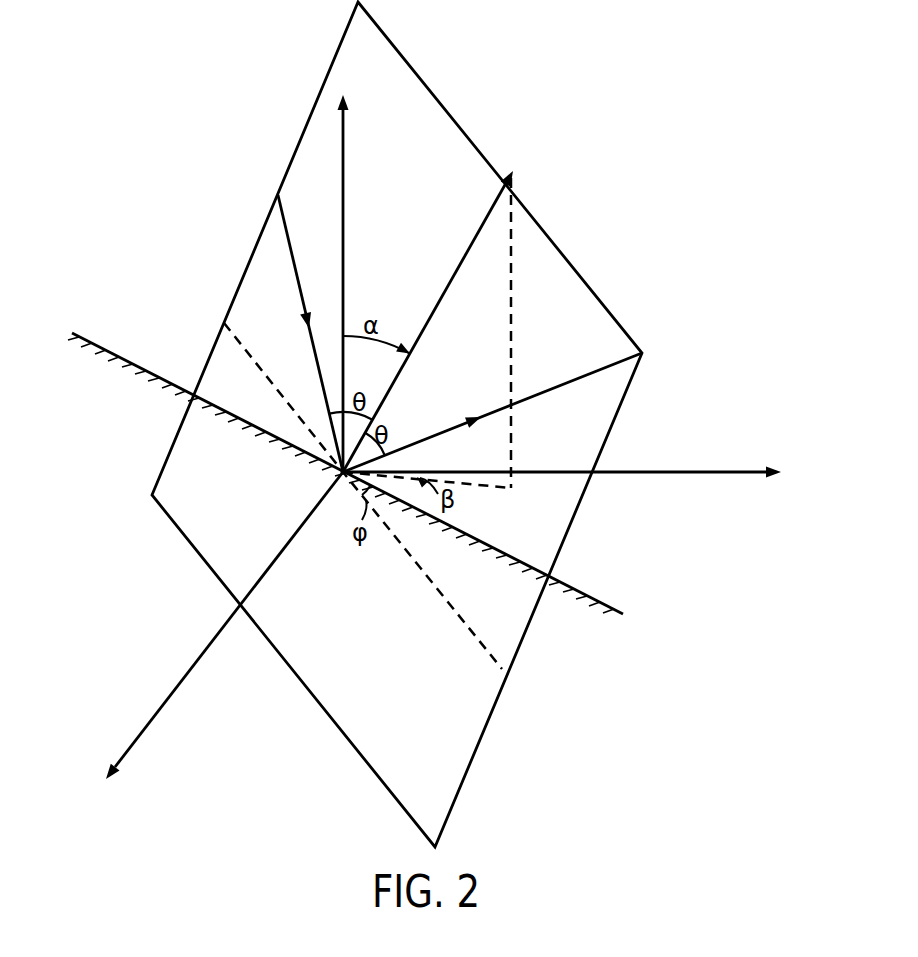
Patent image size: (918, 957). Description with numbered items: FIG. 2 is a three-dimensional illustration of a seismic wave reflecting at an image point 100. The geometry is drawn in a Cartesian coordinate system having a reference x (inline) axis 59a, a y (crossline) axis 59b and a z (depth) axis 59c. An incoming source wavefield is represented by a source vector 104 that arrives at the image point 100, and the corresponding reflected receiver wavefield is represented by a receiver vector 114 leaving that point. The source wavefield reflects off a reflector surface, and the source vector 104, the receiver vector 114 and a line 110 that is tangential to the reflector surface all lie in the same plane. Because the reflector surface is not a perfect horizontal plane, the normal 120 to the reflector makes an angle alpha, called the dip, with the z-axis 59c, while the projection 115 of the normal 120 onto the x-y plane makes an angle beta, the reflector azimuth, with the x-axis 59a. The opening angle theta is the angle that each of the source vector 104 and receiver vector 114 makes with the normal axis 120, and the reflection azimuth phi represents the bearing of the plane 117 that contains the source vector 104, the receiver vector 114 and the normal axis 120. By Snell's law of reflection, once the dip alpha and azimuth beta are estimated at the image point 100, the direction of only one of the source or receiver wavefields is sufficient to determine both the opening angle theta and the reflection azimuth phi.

The x (inline) axis 59a is at (743, 474).
The y (crossline) axis 59b is at (133, 746).
The z (depth) axis 59c is at (345, 127).
The image point 100 is at (340, 474).
The source vector 104 is at (288, 237).
The line tangential to the reflector surface 110 is at (590, 597).
The receiver vector 114 is at (563, 385).
The projection of the normal 115 is at (470, 488).
The plane 117 is at (532, 256).
The normal 120 is at (488, 214).